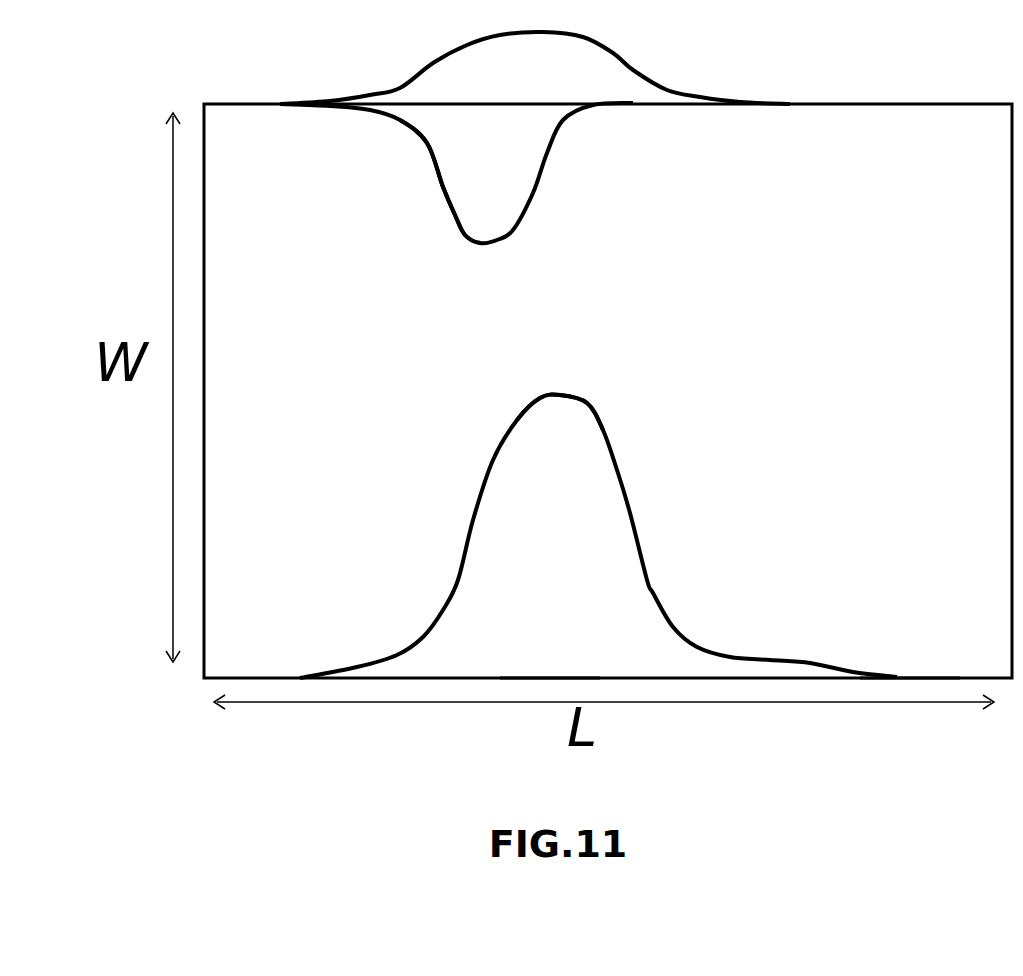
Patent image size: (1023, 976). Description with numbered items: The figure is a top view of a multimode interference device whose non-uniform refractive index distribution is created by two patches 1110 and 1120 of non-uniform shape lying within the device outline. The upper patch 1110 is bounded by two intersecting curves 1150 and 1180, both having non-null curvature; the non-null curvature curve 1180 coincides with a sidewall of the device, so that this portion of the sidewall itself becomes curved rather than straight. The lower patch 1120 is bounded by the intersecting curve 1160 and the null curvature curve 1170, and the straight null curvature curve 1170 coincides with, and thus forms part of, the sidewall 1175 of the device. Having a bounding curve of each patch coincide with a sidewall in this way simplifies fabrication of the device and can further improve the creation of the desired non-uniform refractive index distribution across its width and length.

The patch 1110 is at (446, 168).
The patch 1120 is at (471, 585).
The curve 1150 is at (457, 220).
The curve 1160 is at (587, 400).
The null curvature curve 1170 is at (548, 678).
The sidewall 1175 is at (922, 677).
The non-null curvature curve 1180 is at (540, 38).